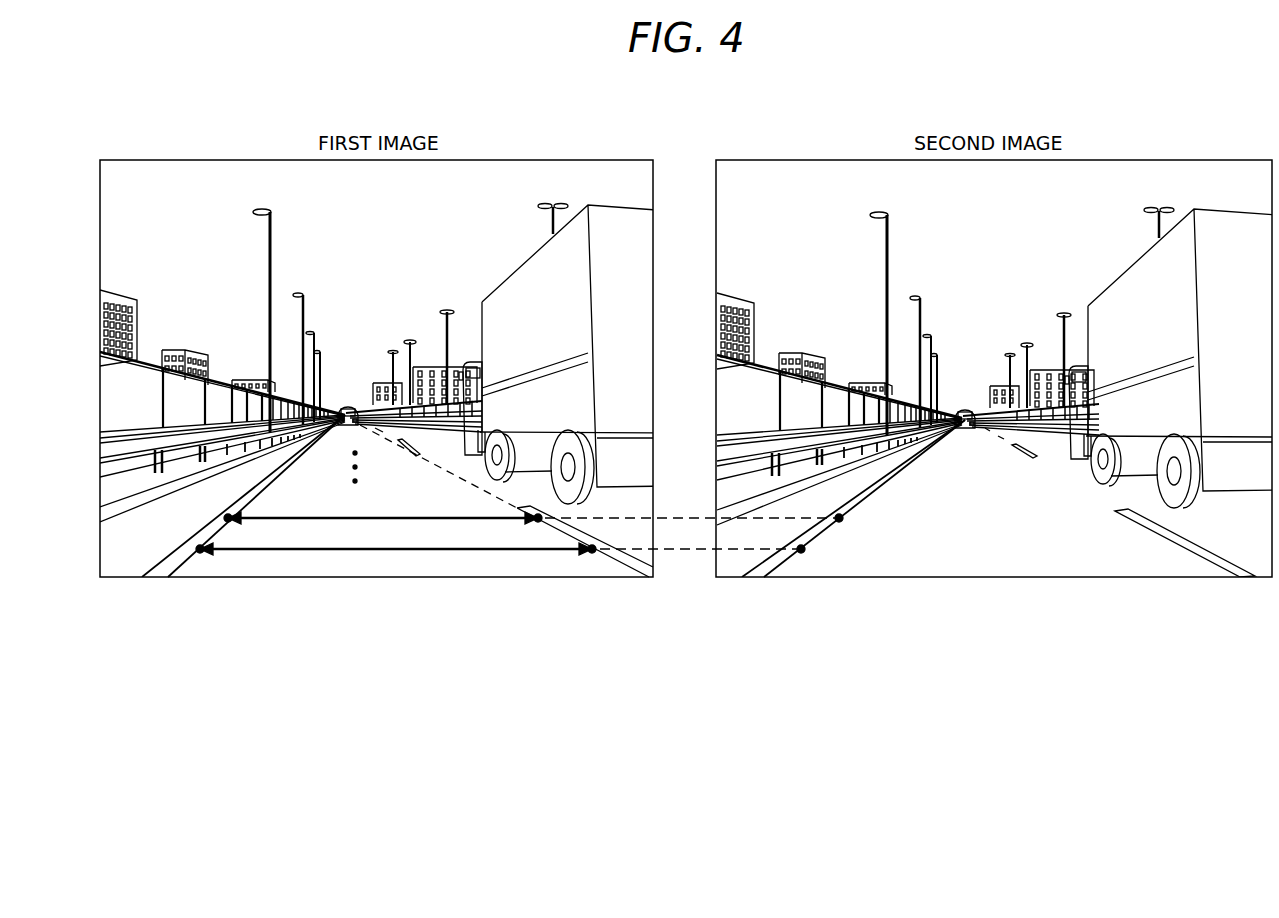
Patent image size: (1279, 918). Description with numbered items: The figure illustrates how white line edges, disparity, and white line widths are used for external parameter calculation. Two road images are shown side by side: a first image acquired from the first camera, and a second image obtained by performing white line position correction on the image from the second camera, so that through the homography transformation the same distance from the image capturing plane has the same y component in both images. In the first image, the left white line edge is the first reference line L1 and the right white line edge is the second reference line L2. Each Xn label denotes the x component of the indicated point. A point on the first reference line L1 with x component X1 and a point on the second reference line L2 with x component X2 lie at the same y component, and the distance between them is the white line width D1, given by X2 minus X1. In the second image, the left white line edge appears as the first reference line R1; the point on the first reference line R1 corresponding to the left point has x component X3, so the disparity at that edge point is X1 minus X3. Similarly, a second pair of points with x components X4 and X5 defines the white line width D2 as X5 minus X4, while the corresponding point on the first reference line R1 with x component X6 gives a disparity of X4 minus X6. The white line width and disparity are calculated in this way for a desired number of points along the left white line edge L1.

The first reference line L1 is at (185, 563).
The second reference line L2 is at (616, 565).
The first reference line in the second image R1 is at (792, 566).
The x component of point on first reference line X1 is at (200, 549).
The x component of point on second reference line X2 is at (592, 550).
The x component of corresponding point in second image X3 is at (801, 549).
The x component of second point on first reference line X4 is at (228, 519).
The x component of second point on second reference line X5 is at (538, 519).
The x component of second corresponding point in second image X6 is at (839, 519).
The white line width D1 is at (396, 538).
The white line width D2 is at (383, 508).